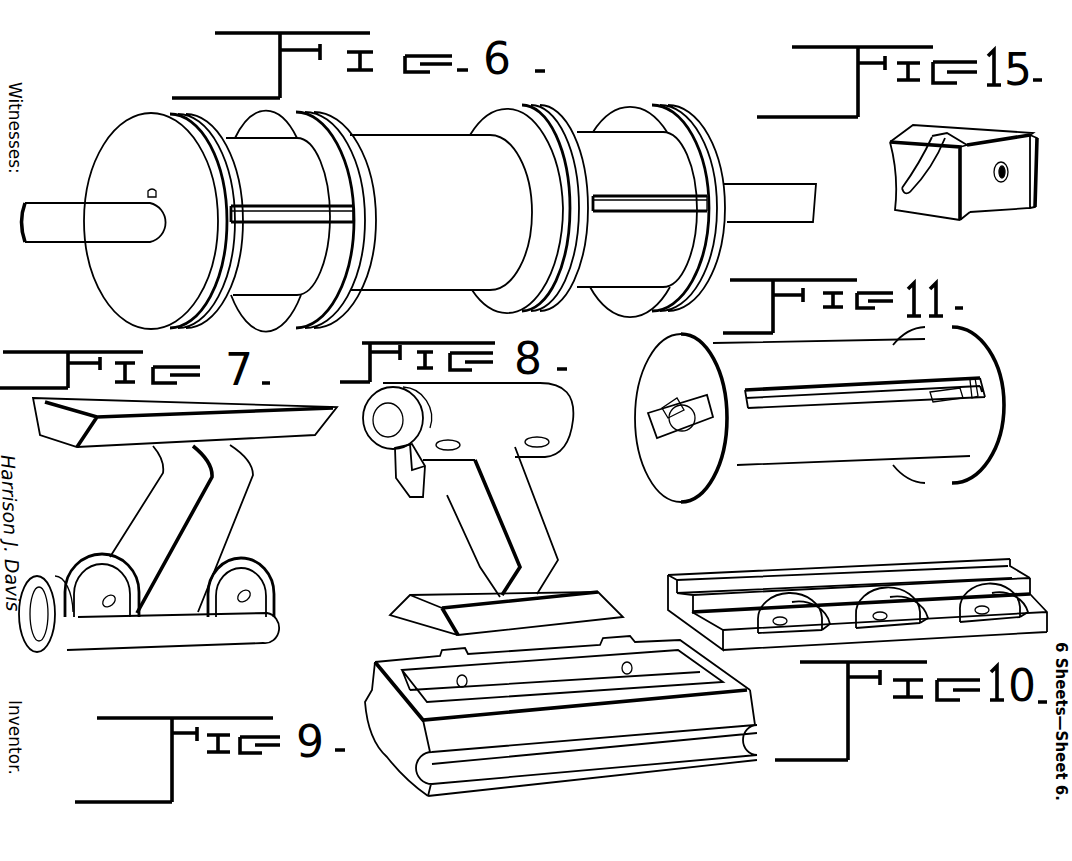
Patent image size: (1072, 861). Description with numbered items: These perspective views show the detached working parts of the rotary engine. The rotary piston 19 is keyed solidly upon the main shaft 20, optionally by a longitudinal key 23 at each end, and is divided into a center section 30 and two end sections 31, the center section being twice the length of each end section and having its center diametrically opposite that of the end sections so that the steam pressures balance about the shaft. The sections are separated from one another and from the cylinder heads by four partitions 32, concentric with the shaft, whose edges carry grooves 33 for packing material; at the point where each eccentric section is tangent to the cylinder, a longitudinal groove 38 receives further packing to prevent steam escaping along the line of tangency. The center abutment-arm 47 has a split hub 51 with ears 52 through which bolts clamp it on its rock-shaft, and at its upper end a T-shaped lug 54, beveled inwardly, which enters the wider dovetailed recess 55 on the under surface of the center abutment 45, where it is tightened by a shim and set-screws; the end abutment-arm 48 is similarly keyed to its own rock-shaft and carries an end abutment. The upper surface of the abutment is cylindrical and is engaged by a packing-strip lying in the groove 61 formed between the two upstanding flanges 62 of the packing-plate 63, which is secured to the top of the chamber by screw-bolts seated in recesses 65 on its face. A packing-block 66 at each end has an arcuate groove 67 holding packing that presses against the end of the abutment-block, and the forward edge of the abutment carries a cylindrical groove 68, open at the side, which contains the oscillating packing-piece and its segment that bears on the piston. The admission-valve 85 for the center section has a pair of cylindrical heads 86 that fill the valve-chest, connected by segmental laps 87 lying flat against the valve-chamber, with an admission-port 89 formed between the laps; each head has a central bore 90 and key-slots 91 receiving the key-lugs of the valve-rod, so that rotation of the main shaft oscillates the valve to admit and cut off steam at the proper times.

In FIG. 6, the rotary piston 19 is at (441, 212).
In FIG. 6, the main shaft 20 is at (62, 232).
In FIG. 6, the longitudinal key 23 is at (150, 191).
In FIG. 6, the center section 30 is at (410, 153).
In FIG. 6, the end sections 31 is at (248, 282).
In FIG. 6, the partitions 32 is at (118, 282).
In FIG. 6, the grooves 33 is at (200, 312).
In FIG. 6, the longitudinal groove 38 is at (292, 222).
In FIG. 9, the abutment 45 is at (393, 718).
In FIG. 7, the center abutment-arm 47 is at (172, 505).
In FIG. 8, the end abutment-arm 48 is at (530, 533).
In FIG. 7, the split hub 51 is at (222, 633).
In FIG. 8, the split hub 51 is at (537, 402).
In FIG. 7, the ears 52 is at (98, 557).
In FIG. 8, the ears 52 is at (412, 472).
In FIG. 7, the T-shaped lug 54 is at (278, 428).
In FIG. 8, the T-shaped lug 54 is at (417, 615).
In FIG. 9, the dovetailed recess 55 is at (541, 679).
In FIG. 10, the groove 61 is at (817, 577).
In FIG. 10, the upstanding flanges 62 is at (740, 577).
In FIG. 10, the packing-plate 63 is at (742, 643).
In FIG. 10, the recesses 65 is at (793, 627).
In FIG. 15, the packing-block 66 is at (943, 207).
In FIG. 15, the arcuate groove 67 is at (902, 188).
In FIG. 9, the cylindrical groove 68 is at (630, 747).
In FIG. 11, the valve 85 is at (867, 458).
In FIG. 11, the cylindrical heads 86 is at (672, 488).
In FIG. 11, the segmental laps 87 is at (837, 400).
In FIG. 11, the admission-port 89 is at (877, 397).
In FIG. 11, the central bore 90 is at (675, 407).
In FIG. 11, the key-slots 91 is at (655, 435).